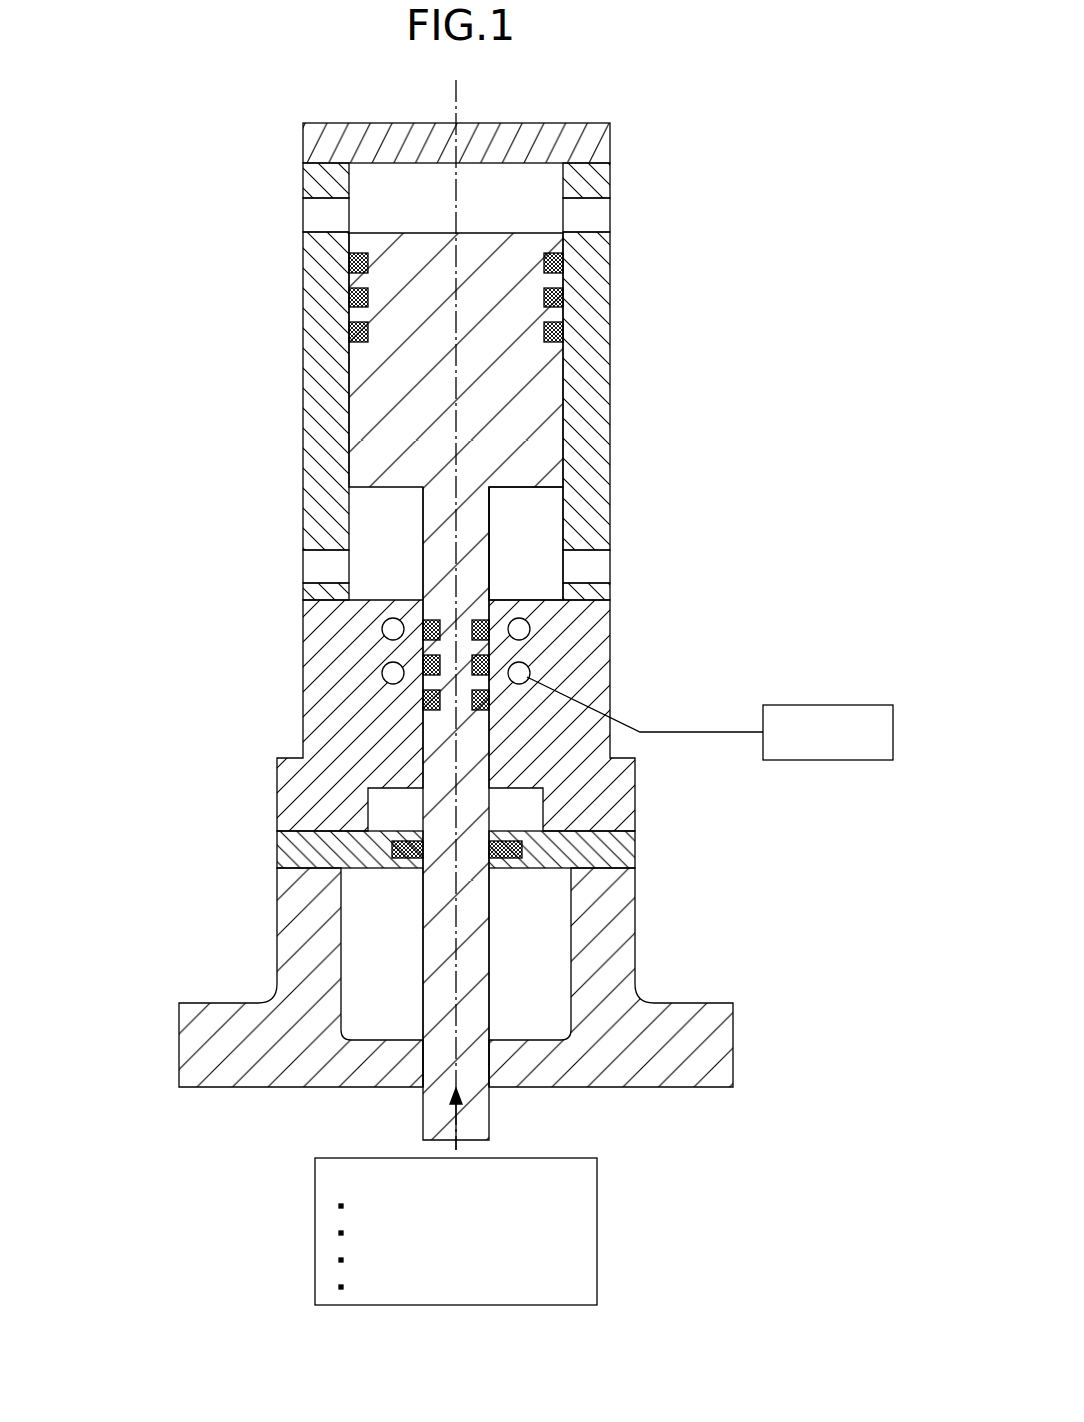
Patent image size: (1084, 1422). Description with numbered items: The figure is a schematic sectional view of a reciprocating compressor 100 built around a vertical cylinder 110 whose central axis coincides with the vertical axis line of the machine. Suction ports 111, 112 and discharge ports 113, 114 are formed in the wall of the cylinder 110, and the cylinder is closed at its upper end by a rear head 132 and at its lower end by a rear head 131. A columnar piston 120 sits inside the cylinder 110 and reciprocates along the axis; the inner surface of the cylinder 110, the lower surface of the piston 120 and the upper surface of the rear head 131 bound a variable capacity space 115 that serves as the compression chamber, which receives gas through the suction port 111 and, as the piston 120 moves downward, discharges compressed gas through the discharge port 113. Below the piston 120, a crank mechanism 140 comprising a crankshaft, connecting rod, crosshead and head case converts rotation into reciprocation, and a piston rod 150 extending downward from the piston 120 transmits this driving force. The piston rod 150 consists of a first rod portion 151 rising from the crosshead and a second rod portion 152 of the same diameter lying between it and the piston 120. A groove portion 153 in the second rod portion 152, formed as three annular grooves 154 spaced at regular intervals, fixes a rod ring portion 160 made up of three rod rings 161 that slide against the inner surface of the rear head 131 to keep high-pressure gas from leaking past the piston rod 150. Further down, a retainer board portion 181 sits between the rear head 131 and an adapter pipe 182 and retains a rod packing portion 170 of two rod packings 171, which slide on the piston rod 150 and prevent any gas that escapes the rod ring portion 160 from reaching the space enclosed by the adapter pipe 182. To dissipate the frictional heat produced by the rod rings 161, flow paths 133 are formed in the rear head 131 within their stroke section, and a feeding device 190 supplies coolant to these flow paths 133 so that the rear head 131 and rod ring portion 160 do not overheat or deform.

The compressor 100 is at (704, 170).
The cylinder 110 is at (460, 380).
The suction port 111 is at (312, 567).
The suction port 112 is at (303, 215).
The discharge port 113 is at (600, 565).
The discharge port 114 is at (612, 213).
The variable capacity space 115 is at (553, 500).
The piston 120 is at (408, 233).
The rear head 131 is at (625, 769).
The rear head 132 is at (612, 133).
The flow paths 133 is at (382, 627).
The crank mechanism 140 is at (597, 1188).
The piston rod 150 is at (509, 657).
The first rod portion 151 is at (438, 975).
The second rod portion 152 is at (433, 522).
The groove portion 153 is at (649, 625).
The annular grooves 154 is at (492, 630).
The rod ring portion 160 is at (272, 679).
The rod rings 161 is at (430, 632).
The rod packing portion 170 is at (313, 850).
The rod packings 171 is at (400, 842).
The retainer board portion 181 is at (625, 849).
The adapter pipe 182 is at (625, 923).
The feeding device 190 is at (850, 705).